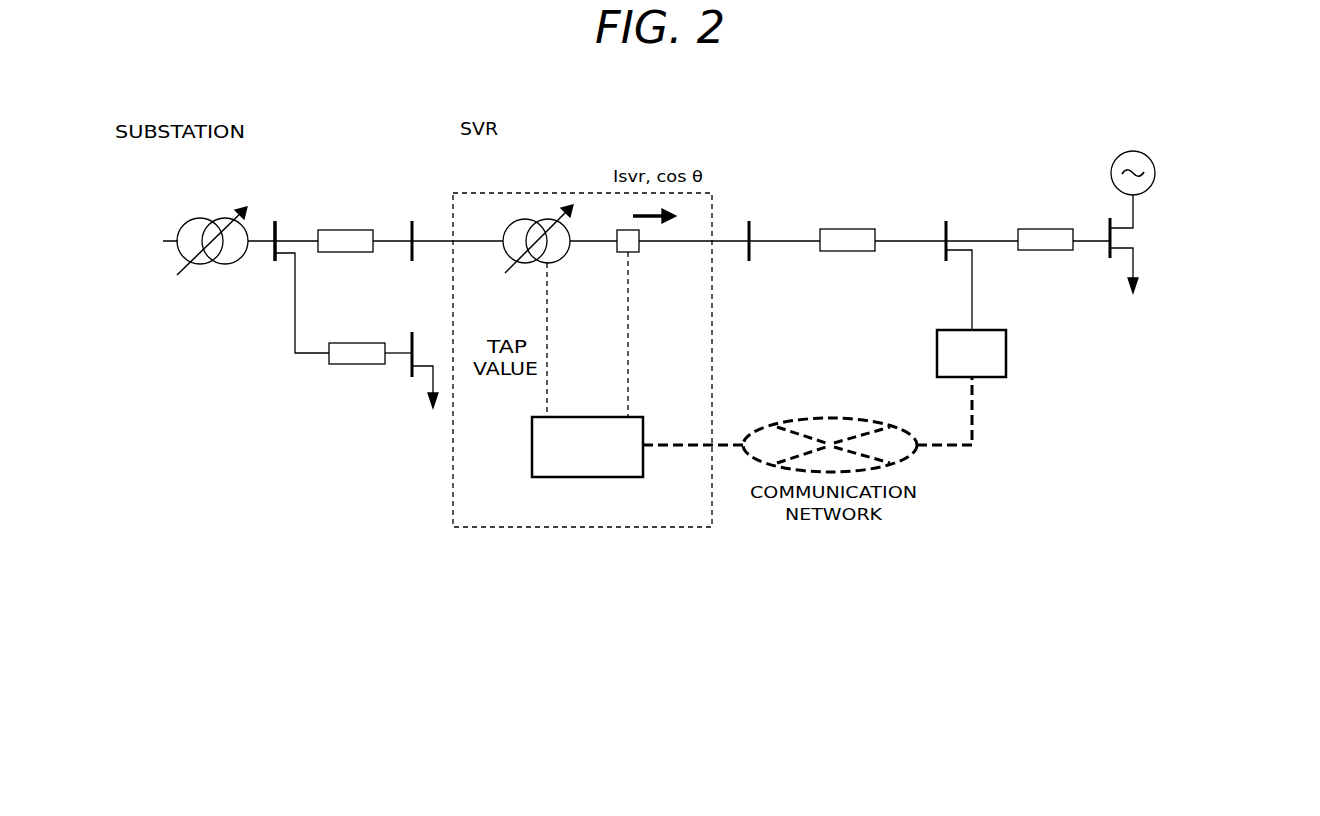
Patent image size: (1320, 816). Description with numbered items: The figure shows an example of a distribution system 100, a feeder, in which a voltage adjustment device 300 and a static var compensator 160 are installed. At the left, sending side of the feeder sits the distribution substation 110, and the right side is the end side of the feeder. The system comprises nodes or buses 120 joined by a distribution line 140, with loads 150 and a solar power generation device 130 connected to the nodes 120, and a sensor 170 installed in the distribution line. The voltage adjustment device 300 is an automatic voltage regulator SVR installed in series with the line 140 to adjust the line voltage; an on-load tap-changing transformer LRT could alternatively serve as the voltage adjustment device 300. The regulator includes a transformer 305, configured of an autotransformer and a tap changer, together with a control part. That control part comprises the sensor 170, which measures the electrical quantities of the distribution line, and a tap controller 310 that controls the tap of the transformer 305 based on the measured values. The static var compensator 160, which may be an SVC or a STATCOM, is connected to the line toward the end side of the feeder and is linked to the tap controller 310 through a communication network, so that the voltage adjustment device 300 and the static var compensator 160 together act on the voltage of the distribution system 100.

The distribution system 100 is at (788, 124).
The distribution substation 110 is at (190, 220).
The node (bus) 120 is at (273, 221).
The solar power generation device 130 is at (1155, 160).
The distribution line 140 is at (348, 231).
The load 150 is at (428, 385).
The static var compensator 160 is at (1007, 350).
The sensor 170 is at (637, 253).
The voltage adjustment device 300 is at (558, 193).
The transformer 305 is at (565, 260).
The tap controller 310 is at (613, 477).